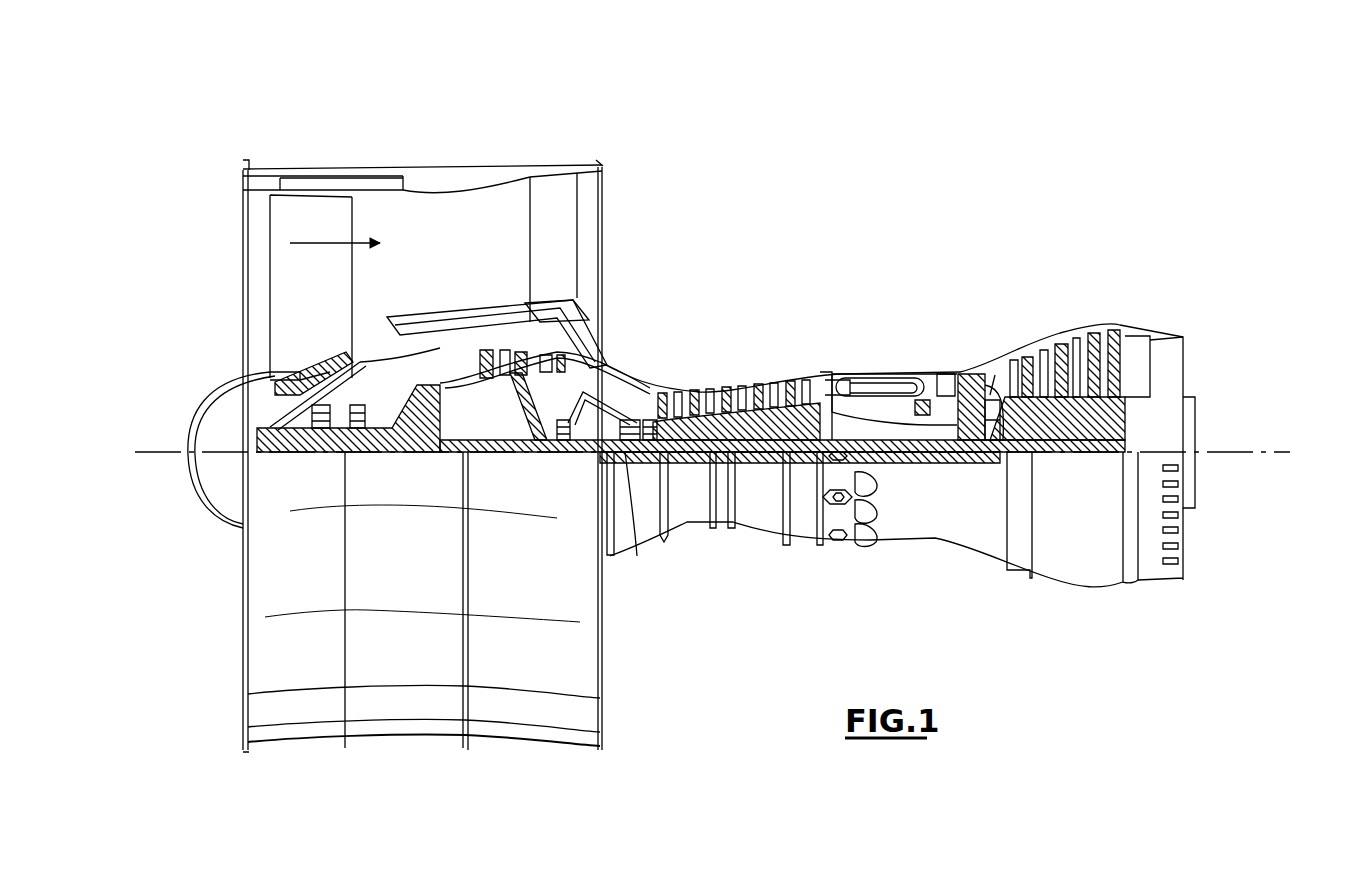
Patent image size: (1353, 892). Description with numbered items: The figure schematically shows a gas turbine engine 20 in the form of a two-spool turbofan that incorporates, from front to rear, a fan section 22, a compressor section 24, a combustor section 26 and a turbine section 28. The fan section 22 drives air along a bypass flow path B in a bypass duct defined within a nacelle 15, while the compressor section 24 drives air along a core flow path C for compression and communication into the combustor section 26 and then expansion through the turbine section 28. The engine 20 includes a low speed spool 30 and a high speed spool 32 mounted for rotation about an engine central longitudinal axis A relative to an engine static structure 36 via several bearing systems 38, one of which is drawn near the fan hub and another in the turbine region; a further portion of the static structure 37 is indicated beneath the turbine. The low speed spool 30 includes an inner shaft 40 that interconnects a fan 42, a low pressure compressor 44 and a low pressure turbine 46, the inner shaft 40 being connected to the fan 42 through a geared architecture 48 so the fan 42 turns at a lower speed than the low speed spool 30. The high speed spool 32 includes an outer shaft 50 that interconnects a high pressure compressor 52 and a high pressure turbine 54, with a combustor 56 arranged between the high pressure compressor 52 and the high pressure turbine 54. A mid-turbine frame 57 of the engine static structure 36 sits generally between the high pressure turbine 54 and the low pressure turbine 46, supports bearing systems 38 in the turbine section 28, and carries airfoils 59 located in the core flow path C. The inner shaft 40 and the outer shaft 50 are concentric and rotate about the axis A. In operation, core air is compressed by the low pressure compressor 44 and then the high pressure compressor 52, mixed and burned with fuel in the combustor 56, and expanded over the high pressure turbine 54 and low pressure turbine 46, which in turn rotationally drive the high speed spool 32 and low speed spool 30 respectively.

The gas turbine engine 20 is at (884, 216).
The fan section 22 is at (352, 158).
The nacelle 15 is at (425, 172).
The fan 42 is at (327, 298).
The low pressure compressor 44 is at (535, 360).
The compressor section 24 is at (651, 360).
The high pressure compressor 52 is at (732, 420).
The high speed spool 32 is at (800, 420).
The combustor section 26 is at (878, 348).
The combustor 56 is at (880, 393).
The high pressure turbine 54 is at (946, 372).
The mid-turbine frame 57 is at (988, 356).
The turbine section 28 is at (1022, 308).
The low pressure turbine 46 is at (1070, 332).
The airfoils 59 is at (1012, 410).
The geared architecture 48 is at (433, 437).
The bearing systems 38 is at (565, 440).
The inner shaft 40 is at (622, 456).
The low speed spool 30 is at (762, 464).
The engine static structure 36 is at (800, 542).
The outer shaft 50 is at (887, 455).
The engine static structure 37 is at (990, 560).
The engine central longitudinal axis A is at (1282, 452).
The bypass flow path B is at (327, 242).
The core flow path C is at (425, 350).